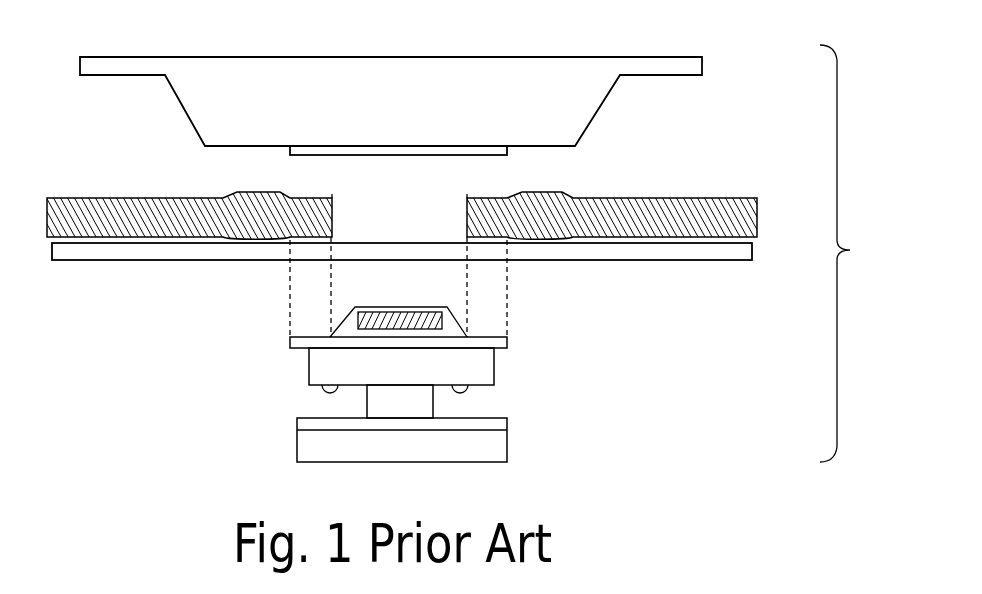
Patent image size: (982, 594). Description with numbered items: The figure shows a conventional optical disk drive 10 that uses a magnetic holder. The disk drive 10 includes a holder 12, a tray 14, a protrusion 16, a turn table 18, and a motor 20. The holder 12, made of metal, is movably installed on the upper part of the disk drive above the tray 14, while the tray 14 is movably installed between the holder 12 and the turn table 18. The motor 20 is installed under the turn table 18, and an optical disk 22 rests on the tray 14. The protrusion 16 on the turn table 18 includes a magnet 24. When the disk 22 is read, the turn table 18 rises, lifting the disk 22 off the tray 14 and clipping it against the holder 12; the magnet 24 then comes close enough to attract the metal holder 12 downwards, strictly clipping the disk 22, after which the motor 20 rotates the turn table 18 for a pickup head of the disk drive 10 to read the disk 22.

The optical disk drive 10 is at (860, 253).
The holder 12 is at (128, 105).
The tray 14 is at (646, 260).
The protrusion 16 is at (450, 327).
The turn table 18 is at (484, 368).
The motor 20 is at (508, 440).
The optical disk 22 is at (663, 215).
The magnet 24 is at (360, 317).